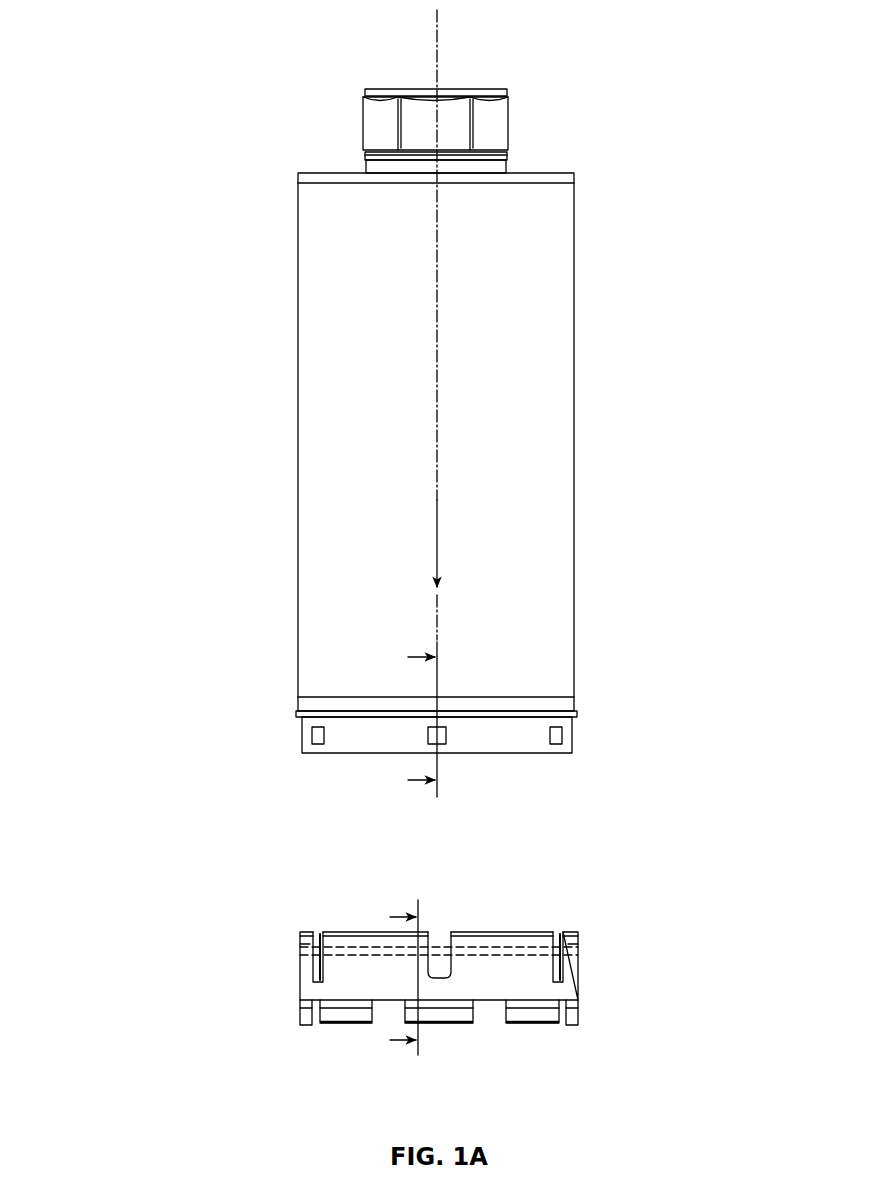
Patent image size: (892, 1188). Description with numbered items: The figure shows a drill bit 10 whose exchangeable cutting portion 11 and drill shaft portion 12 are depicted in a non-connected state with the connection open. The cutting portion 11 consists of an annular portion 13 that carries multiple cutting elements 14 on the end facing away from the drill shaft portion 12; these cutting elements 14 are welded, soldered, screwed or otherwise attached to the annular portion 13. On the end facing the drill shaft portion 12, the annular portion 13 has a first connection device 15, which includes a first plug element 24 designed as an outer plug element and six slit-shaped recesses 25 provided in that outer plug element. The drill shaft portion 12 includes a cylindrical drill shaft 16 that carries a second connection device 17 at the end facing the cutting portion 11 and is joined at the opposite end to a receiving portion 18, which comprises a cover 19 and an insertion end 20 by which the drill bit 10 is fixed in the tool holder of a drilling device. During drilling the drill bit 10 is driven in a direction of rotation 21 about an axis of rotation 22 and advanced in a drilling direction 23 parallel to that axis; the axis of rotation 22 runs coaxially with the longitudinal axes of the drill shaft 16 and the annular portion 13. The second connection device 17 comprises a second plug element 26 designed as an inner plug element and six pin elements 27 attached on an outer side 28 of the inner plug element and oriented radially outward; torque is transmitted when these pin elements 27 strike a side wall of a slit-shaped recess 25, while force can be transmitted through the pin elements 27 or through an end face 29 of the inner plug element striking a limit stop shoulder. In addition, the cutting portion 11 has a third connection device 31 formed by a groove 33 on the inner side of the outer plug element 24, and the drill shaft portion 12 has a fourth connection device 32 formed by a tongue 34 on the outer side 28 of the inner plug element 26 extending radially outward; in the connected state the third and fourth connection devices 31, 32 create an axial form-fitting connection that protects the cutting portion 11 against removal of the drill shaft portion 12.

The drill bit 10 is at (240, 105).
The cutting portion 11 is at (394, 977).
The drill shaft portion 12 is at (436, 360).
The annular portion 13 is at (312, 988).
The cutting elements 14 is at (305, 1015).
The first connection device 15 is at (590, 963).
The drill shaft 16 is at (565, 410).
The second connection device 17 is at (451, 721).
The receiving portion 18 is at (676, 127).
The cover 19 is at (322, 180).
The insertion end 20 is at (498, 125).
The direction of rotation 21 is at (391, 62).
The axis of rotation 22 is at (437, 283).
The drilling direction 23 is at (438, 543).
The first plug element 24 is at (503, 942).
The slit-shaped recesses 25 is at (318, 932).
The second plug element 26 is at (478, 705).
The pin elements 27 is at (318, 742).
The outer side 28 is at (297, 718).
The end face 29 is at (488, 755).
The third connection device 31 is at (576, 945).
The fourth connection device 32 is at (552, 708).
The groove 33 is at (486, 950).
The tongue 34 is at (347, 715).